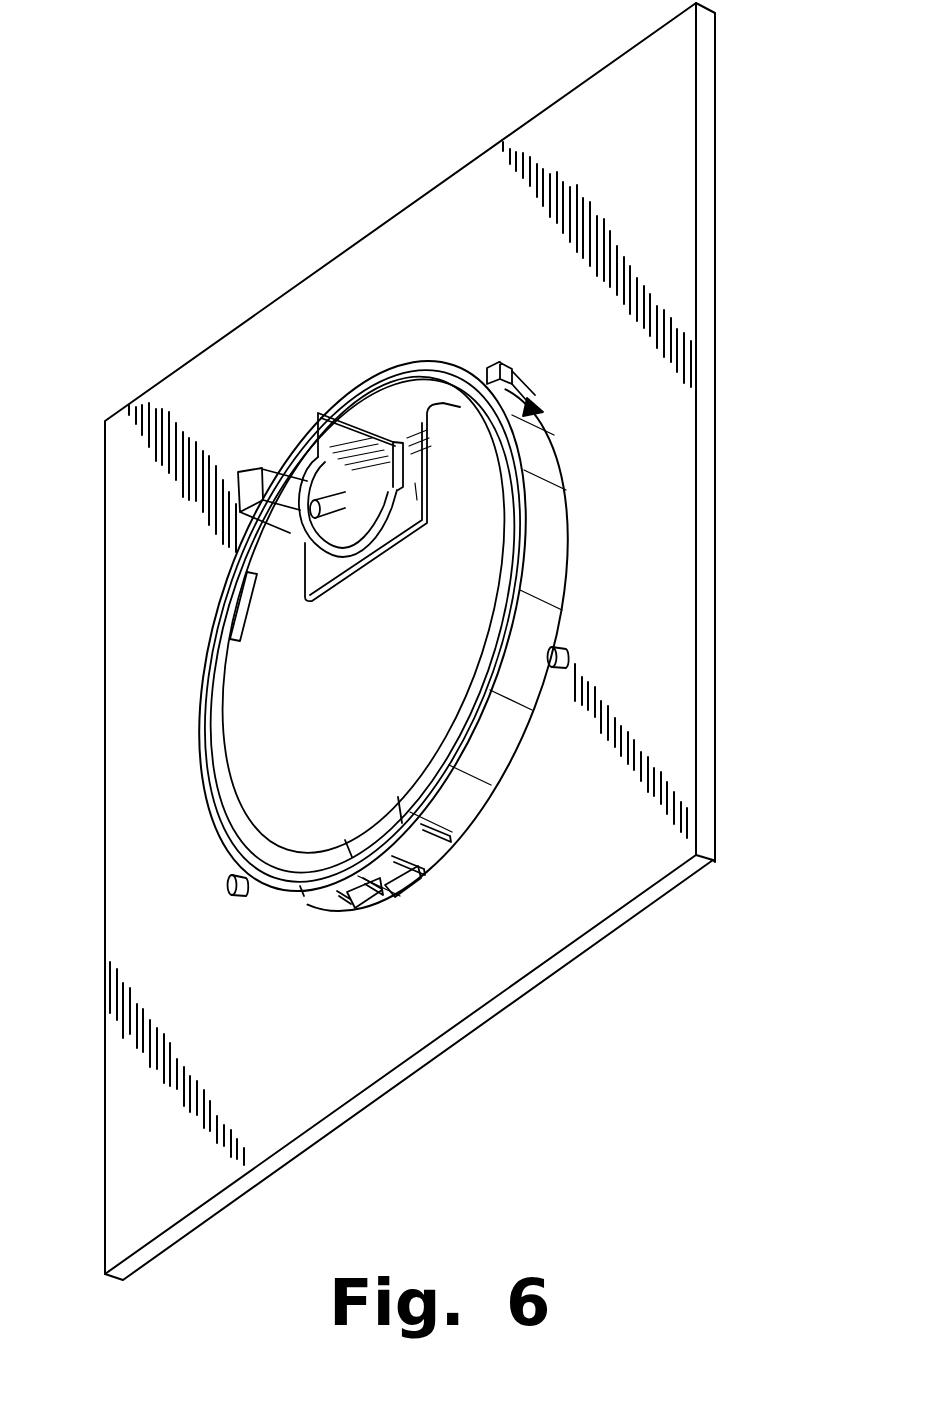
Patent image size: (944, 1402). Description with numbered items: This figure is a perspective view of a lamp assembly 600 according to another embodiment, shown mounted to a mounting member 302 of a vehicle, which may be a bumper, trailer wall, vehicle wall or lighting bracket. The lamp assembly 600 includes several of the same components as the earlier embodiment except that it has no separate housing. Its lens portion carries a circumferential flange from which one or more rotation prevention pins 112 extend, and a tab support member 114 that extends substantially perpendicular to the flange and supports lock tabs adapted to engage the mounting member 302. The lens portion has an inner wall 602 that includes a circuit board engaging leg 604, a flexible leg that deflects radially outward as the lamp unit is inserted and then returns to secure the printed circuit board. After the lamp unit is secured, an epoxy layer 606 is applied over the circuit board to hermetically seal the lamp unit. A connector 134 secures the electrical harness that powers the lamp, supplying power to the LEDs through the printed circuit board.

The mounting member 302 is at (697, 131).
The lamp assembly 600 is at (343, 636).
The inner wall 602 is at (204, 694).
The circuit board engaging leg 604 is at (234, 630).
The epoxy layer 606 is at (257, 748).
The tab support member 114 is at (553, 536).
The rotation prevention pin 112 is at (572, 656).
The connector 134 is at (286, 451).